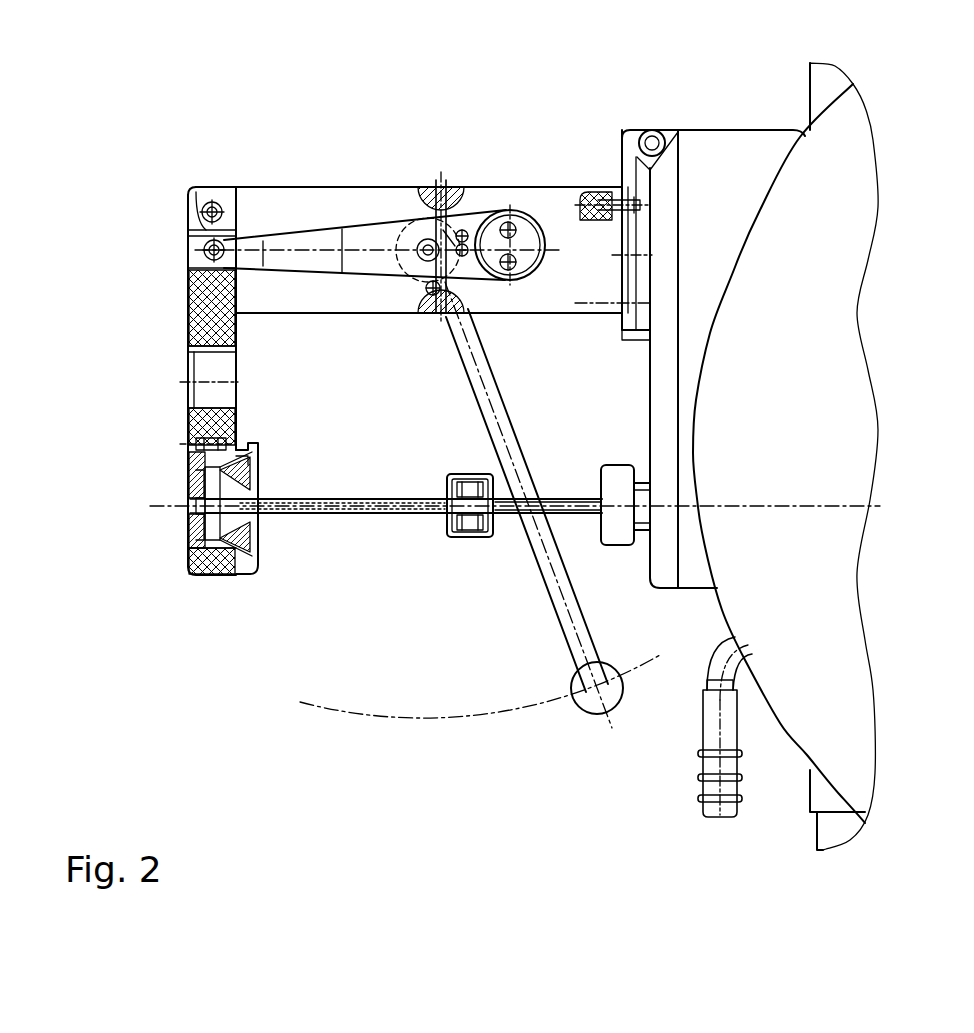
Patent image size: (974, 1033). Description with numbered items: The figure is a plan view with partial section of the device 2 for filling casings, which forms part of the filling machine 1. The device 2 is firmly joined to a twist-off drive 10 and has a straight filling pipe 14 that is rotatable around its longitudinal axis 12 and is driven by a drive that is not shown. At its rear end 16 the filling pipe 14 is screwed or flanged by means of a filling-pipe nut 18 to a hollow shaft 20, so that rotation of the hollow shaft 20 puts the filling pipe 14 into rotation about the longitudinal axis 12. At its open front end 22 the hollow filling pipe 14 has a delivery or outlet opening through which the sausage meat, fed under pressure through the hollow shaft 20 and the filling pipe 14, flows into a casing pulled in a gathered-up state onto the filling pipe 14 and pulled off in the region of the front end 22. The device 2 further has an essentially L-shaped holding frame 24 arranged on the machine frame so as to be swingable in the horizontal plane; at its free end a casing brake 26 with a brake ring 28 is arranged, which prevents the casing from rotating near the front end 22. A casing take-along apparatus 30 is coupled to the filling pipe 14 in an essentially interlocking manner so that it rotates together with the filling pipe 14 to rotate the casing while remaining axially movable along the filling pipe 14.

The filling machine 1 is at (785, 456).
The device for filling casings 2 is at (205, 163).
The twist-off drive 10 is at (670, 627).
The longitudinal axis 12 is at (327, 520).
The filling pipe 14 is at (390, 520).
The rear end 16 is at (590, 480).
The filling-pipe nut 18 is at (611, 477).
The hollow shaft 20 is at (645, 533).
The front end 22 is at (224, 484).
The holding frame 24 is at (270, 212).
The casing brake 26 is at (167, 515).
The brake ring 28 is at (187, 483).
The casing take-along apparatus 30 is at (465, 548).